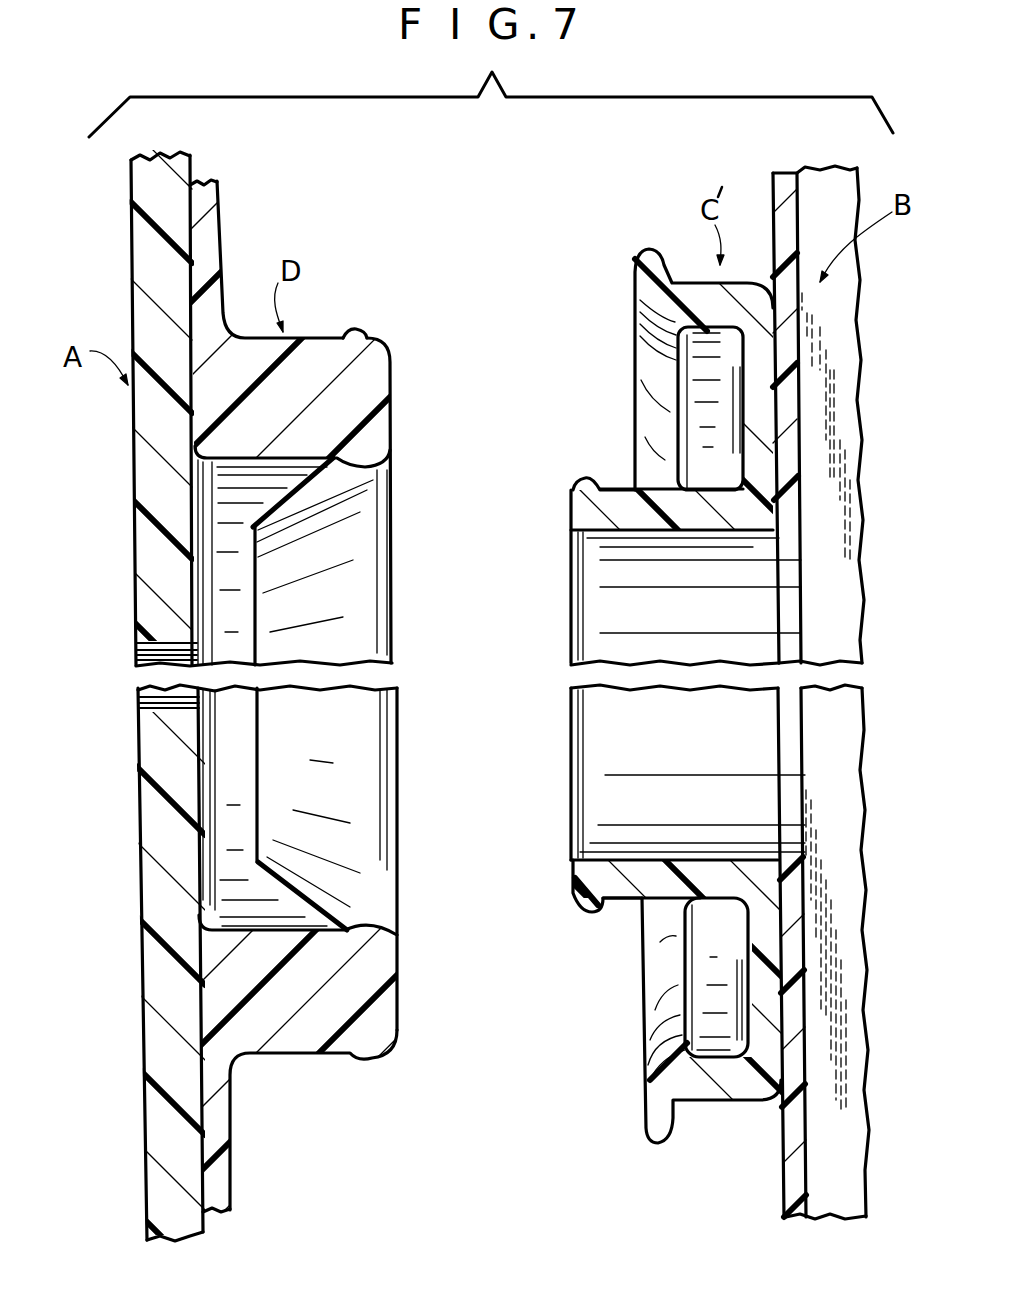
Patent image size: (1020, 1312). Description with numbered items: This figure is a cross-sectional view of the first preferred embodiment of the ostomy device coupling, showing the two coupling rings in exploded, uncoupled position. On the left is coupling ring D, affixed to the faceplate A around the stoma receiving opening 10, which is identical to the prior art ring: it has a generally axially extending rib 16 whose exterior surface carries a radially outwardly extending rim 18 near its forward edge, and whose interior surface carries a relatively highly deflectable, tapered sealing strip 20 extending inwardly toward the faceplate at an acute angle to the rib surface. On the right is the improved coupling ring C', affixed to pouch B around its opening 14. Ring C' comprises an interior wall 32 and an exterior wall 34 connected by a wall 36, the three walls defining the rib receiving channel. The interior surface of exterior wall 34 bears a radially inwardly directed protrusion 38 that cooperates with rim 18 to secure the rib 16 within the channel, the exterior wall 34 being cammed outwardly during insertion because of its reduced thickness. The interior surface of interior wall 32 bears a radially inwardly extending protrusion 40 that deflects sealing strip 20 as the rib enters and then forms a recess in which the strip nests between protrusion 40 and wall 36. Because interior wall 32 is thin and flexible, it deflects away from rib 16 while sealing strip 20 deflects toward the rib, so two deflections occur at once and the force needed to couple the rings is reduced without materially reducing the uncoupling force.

The central opening 10 is at (140, 657).
The opening 14 is at (793, 577).
The rib 16 is at (300, 392).
The rim 18 is at (367, 337).
The sealing strip 20 is at (332, 481).
The interior wall 32 is at (627, 515).
The exterior wall 34 is at (703, 297).
The wall 36 is at (760, 405).
The protrusion 38 is at (665, 328).
The protrusion 40 is at (576, 490).